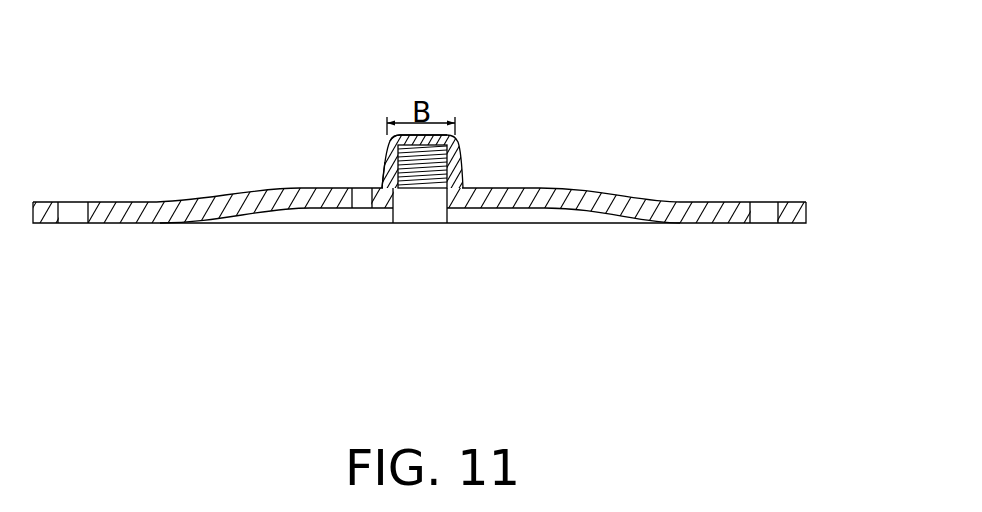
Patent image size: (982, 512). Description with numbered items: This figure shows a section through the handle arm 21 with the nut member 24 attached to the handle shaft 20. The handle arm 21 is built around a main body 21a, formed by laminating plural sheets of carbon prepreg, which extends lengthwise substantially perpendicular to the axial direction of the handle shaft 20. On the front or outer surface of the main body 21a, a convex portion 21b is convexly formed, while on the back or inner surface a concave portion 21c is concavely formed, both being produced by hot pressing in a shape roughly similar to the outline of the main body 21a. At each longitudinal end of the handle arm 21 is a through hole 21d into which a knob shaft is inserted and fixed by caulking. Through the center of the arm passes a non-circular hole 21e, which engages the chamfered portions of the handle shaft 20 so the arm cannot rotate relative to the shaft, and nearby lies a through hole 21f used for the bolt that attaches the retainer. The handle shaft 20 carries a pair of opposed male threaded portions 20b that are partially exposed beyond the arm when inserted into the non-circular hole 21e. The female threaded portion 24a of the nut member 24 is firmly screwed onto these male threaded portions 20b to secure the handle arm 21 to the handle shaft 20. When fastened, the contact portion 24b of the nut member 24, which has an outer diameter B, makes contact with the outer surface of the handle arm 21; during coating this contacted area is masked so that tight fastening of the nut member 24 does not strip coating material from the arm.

The handle arm 21 is at (618, 142).
The main body 21a is at (582, 195).
The convex portion 21b is at (299, 188).
The concave portion 21c is at (298, 212).
The through hole 21d is at (75, 212).
The non-circular hole 21e is at (432, 197).
The through hole 21f is at (358, 215).
The handle shaft 20 is at (428, 143).
The male threaded portion 20b is at (388, 133).
The nut member 24 is at (463, 155).
The female threaded portion 24a is at (437, 172).
The contact portion 24b is at (383, 177).